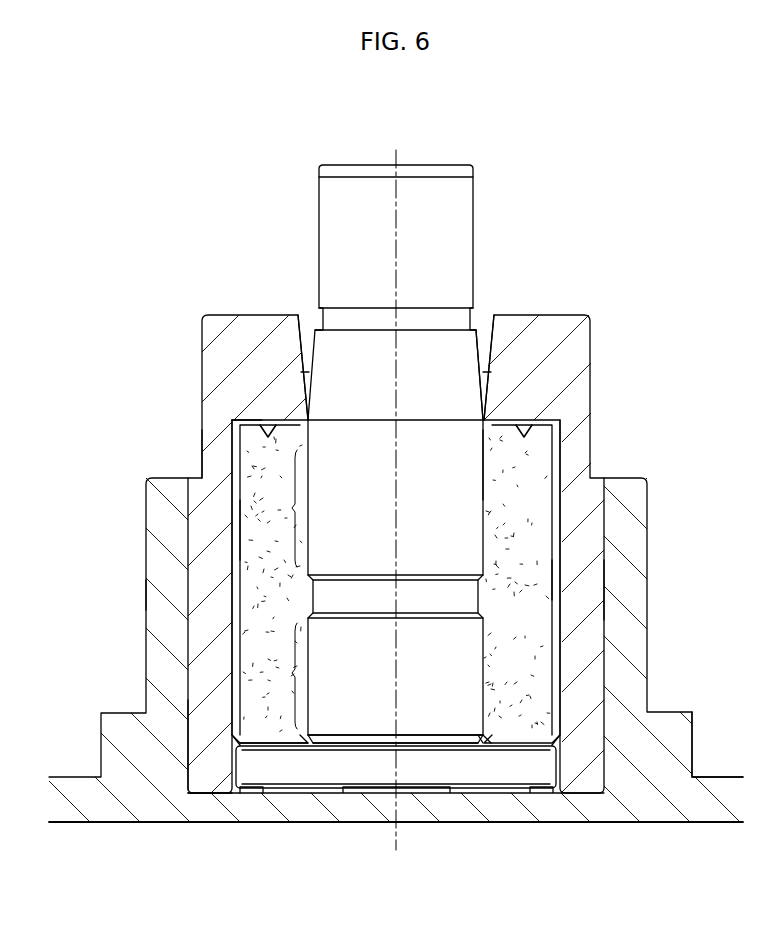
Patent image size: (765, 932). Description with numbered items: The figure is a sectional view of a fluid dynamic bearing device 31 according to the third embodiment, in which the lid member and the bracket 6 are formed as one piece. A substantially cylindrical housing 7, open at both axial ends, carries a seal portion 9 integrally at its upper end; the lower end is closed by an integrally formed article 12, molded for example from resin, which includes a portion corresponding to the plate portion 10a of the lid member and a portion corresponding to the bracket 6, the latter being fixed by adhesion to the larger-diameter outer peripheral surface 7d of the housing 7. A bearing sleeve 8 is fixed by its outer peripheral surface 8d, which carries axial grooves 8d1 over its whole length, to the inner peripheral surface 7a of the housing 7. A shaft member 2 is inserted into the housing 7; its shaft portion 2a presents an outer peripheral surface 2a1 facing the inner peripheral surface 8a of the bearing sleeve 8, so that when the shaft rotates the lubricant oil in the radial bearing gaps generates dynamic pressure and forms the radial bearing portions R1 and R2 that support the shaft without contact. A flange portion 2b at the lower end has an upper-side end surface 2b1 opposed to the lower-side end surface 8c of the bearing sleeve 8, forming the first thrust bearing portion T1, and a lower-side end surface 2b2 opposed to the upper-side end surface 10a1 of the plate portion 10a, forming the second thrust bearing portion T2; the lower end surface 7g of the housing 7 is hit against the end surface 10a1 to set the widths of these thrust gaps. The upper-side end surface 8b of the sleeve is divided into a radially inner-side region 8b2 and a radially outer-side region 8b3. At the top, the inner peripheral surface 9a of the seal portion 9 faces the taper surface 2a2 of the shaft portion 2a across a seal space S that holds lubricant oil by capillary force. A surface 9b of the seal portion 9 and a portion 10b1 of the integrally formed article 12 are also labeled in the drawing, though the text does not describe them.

The shaft member 2 is at (477, 208).
The shaft portion 2a is at (432, 190).
The outer peripheral surface 2a1 is at (490, 460).
The taper surface 2a2 is at (487, 360).
The flange portion 2b is at (515, 773).
The upper-side end surface of flange portion 2b1 is at (513, 735).
The lower-side end surface of flange portion 2b2 is at (480, 792).
The fluid dynamic bearing device 31 is at (622, 258).
The seal portion 9 is at (255, 335).
The inner peripheral surface of seal portion 9a is at (347, 347).
The seal outer surface 9b is at (200, 448).
The seal space S is at (305, 370).
The bearing sleeve 8 is at (533, 513).
The inner peripheral surface of bearing sleeve 8a is at (555, 575).
The upper-side end surface of bearing sleeve 8b is at (517, 428).
The radially inner-side region 8b2 is at (280, 420).
The radially outer-side region 8b3 is at (252, 420).
The lower-side end surface of bearing sleeve 8c is at (250, 790).
The outer peripheral surface of bearing sleeve 8d is at (560, 632).
The axial grooves 8d1 is at (245, 535).
The housing 7 is at (205, 568).
The inner peripheral surface of housing 7a is at (565, 600).
The larger-diameter outer peripheral surface 7d is at (170, 595).
The lower end surface of housing 7g is at (205, 795).
The radial bearing portion R1 is at (292, 508).
The lower-side radial bearing portion R2 is at (292, 673).
The first thrust bearing portion T1 is at (280, 740).
The second thrust bearing portion T2 is at (287, 793).
The plate portion 10a is at (360, 812).
The upper-side end surface of plate portion 10a1 is at (437, 773).
The base step portion 10b1 is at (190, 760).
The integrally formed article 12 is at (597, 824).
The bracket 6 is at (713, 805).